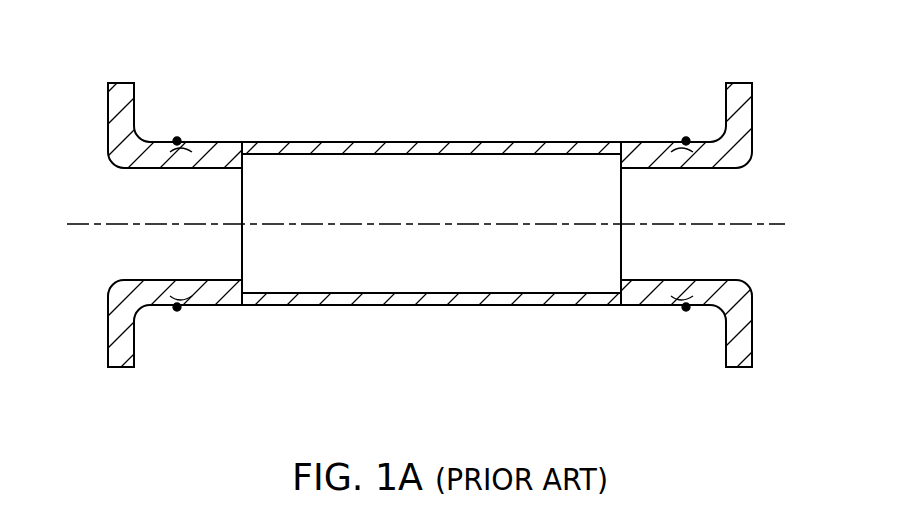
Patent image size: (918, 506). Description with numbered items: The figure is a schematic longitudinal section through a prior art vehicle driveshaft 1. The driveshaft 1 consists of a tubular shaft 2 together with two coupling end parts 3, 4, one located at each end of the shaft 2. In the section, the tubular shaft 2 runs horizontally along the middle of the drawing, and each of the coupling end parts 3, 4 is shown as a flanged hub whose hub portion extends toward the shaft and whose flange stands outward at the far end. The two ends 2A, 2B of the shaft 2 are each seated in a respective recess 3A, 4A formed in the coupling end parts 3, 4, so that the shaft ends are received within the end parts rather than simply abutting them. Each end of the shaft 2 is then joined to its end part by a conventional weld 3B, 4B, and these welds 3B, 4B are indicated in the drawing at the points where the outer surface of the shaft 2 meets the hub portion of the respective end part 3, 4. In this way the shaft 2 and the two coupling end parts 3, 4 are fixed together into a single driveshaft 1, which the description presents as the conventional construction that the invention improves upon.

The driveshaft 1 is at (416, 93).
The tubular shaft 2 is at (426, 308).
The end of shaft 2A is at (655, 298).
The end of shaft 2B is at (198, 303).
The coupling end part 3 is at (125, 360).
The recess 3A is at (138, 167).
The weld 3B is at (177, 141).
The coupling end part 4 is at (737, 105).
The recess 4A is at (710, 167).
The weld 4B is at (686, 140).